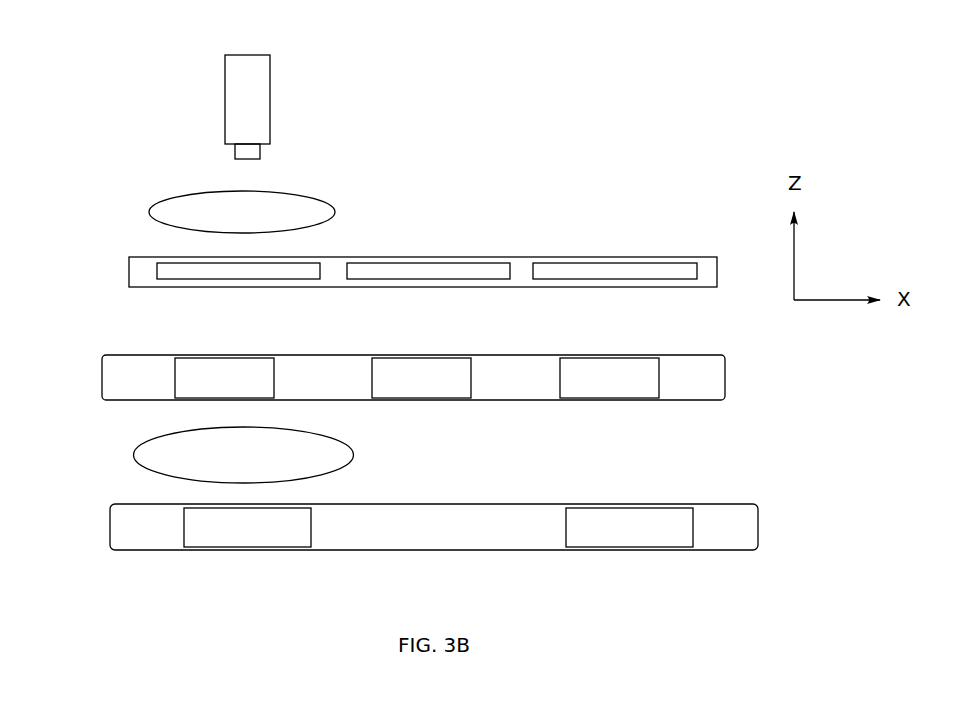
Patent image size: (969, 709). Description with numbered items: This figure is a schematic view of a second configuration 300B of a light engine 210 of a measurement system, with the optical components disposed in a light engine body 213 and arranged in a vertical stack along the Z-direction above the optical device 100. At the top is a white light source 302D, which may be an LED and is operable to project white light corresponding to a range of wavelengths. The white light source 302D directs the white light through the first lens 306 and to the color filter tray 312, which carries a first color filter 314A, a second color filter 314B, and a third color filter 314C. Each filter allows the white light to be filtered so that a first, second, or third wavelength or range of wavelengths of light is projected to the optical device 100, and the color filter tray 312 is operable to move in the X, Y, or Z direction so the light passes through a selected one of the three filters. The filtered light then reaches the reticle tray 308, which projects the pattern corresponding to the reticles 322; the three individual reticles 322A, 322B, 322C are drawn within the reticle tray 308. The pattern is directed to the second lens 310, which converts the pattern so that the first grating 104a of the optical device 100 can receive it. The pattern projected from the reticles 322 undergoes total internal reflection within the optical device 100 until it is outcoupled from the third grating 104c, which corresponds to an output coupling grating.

The light engine 210 is at (808, 86).
The light engine body 213 is at (830, 161).
The second configuration 300B is at (85, 220).
The white light source 302D is at (270, 98).
The first lens 306 is at (335, 210).
The color filter tray 312 is at (129, 268).
The first color filter 314A is at (237, 272).
The second color filter 314B is at (432, 272).
The third color filter 314C is at (630, 272).
The reticle tray 308 is at (725, 373).
The reticles 322 is at (118, 384).
The lens region 322A is at (196, 382).
The lens region 322B is at (443, 380).
The lens region 322C is at (612, 378).
The second lens 310 is at (353, 453).
The optical device 100 is at (758, 525).
The first grating 104a is at (242, 528).
The third grating 104c is at (623, 528).